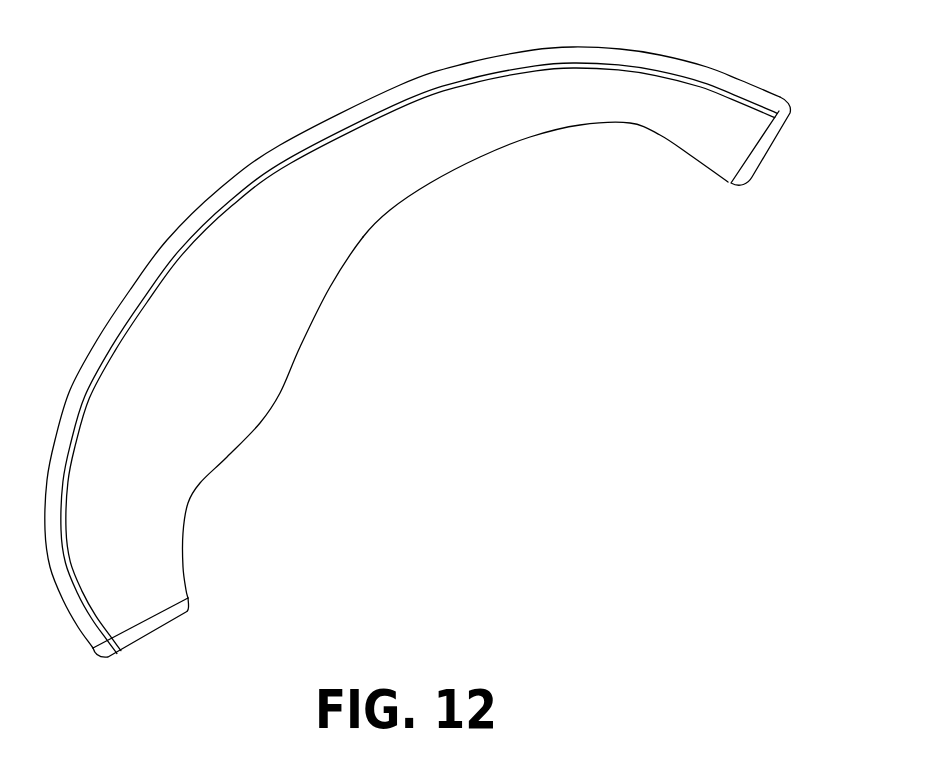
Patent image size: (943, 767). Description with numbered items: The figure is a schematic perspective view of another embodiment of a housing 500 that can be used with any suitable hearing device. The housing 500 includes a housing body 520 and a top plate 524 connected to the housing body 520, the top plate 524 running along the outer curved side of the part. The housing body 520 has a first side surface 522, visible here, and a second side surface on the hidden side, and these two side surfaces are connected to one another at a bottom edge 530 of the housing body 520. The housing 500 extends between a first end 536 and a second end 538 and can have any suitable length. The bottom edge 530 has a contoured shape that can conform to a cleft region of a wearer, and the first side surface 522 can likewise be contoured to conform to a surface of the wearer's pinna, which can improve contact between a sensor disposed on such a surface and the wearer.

The housing 500 is at (437, 373).
The housing body 520 is at (455, 357).
The first side surface 522 is at (500, 117).
The top plate 524 is at (242, 170).
The bottom edge 530 is at (263, 425).
The first end 536 is at (763, 163).
The second end 538 is at (102, 657).